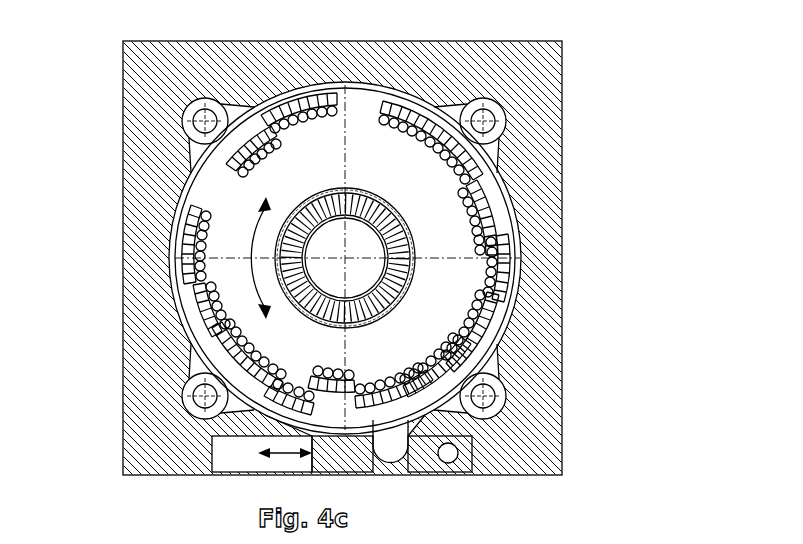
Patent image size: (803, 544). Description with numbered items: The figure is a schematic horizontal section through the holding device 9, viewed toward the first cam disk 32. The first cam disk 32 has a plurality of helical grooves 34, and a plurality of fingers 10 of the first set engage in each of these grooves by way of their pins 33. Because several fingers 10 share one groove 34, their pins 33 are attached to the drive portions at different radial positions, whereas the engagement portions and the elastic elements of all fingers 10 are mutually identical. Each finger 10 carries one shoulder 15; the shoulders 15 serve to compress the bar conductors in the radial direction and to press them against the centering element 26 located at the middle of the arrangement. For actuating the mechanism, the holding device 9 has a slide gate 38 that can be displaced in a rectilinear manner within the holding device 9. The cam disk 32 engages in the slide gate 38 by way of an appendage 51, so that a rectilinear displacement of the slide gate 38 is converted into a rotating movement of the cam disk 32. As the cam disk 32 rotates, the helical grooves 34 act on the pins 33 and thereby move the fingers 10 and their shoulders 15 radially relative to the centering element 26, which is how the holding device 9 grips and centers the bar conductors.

The holding device 9 is at (102, 48).
The fingers 10 is at (301, 208).
The shoulder 15 is at (320, 320).
The centering element 26 is at (369, 243).
The first cam disk 32 is at (502, 217).
The pins 33 is at (357, 123).
The helical grooves 34 is at (216, 168).
The slide gate 38 is at (422, 456).
The appendage 51 is at (391, 445).